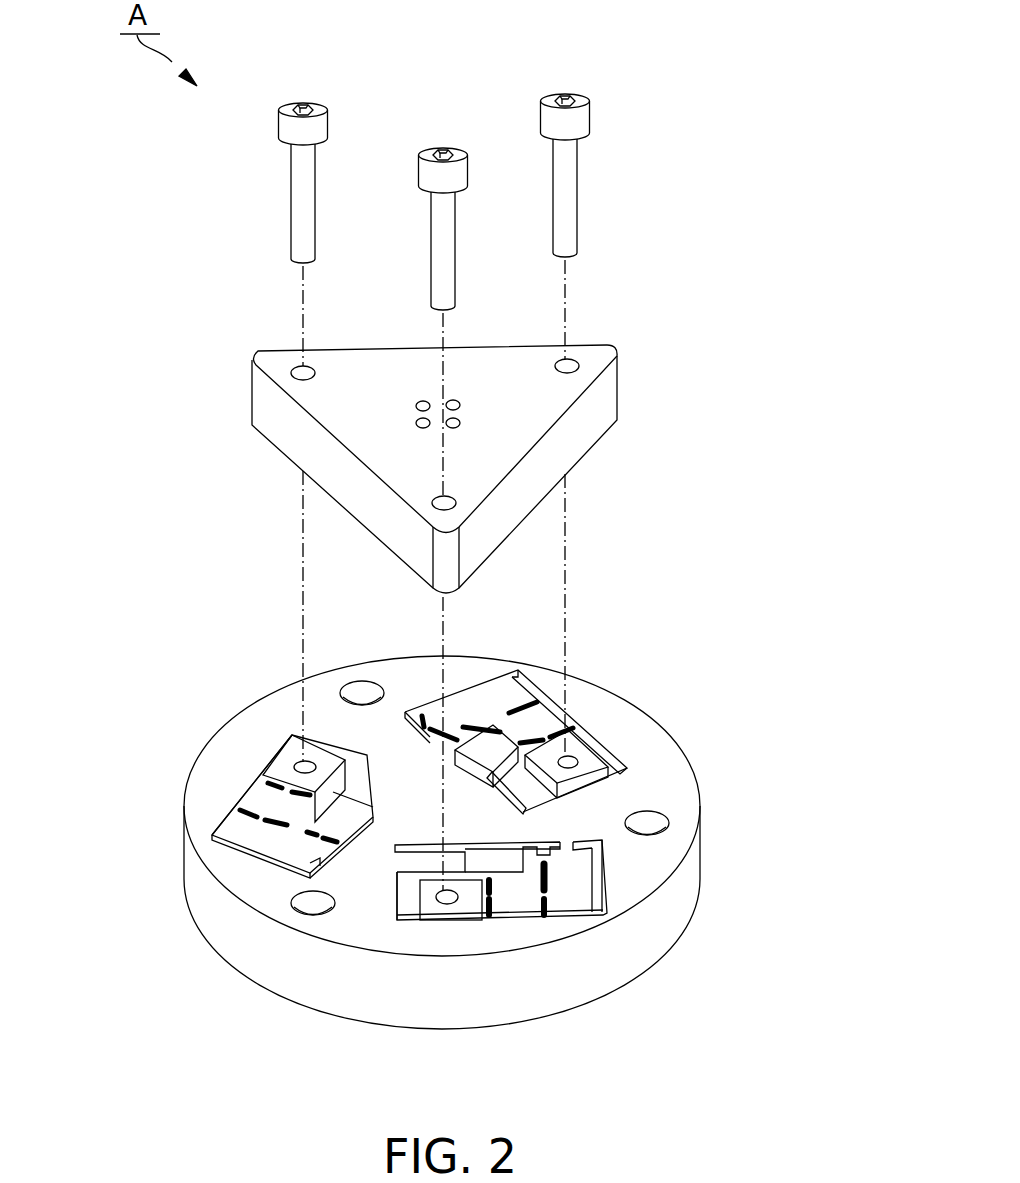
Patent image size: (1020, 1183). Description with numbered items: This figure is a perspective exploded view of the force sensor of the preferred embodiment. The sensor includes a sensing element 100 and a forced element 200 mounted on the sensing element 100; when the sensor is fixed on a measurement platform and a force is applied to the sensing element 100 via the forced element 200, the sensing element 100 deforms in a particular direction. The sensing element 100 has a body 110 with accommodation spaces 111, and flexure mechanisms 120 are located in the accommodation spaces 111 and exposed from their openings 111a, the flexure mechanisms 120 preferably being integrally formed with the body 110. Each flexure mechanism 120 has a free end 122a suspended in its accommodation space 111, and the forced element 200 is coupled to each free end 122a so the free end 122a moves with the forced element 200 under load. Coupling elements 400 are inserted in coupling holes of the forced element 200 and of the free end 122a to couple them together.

The sensing element 100 is at (462, 862).
The body 110 is at (247, 963).
The accommodation space 111 is at (233, 807).
The opening 111a is at (215, 853).
The flexure mechanism 120 is at (417, 862).
The free end 122a is at (288, 768).
The forced element 200 is at (602, 392).
The coupling element 400 is at (443, 146).